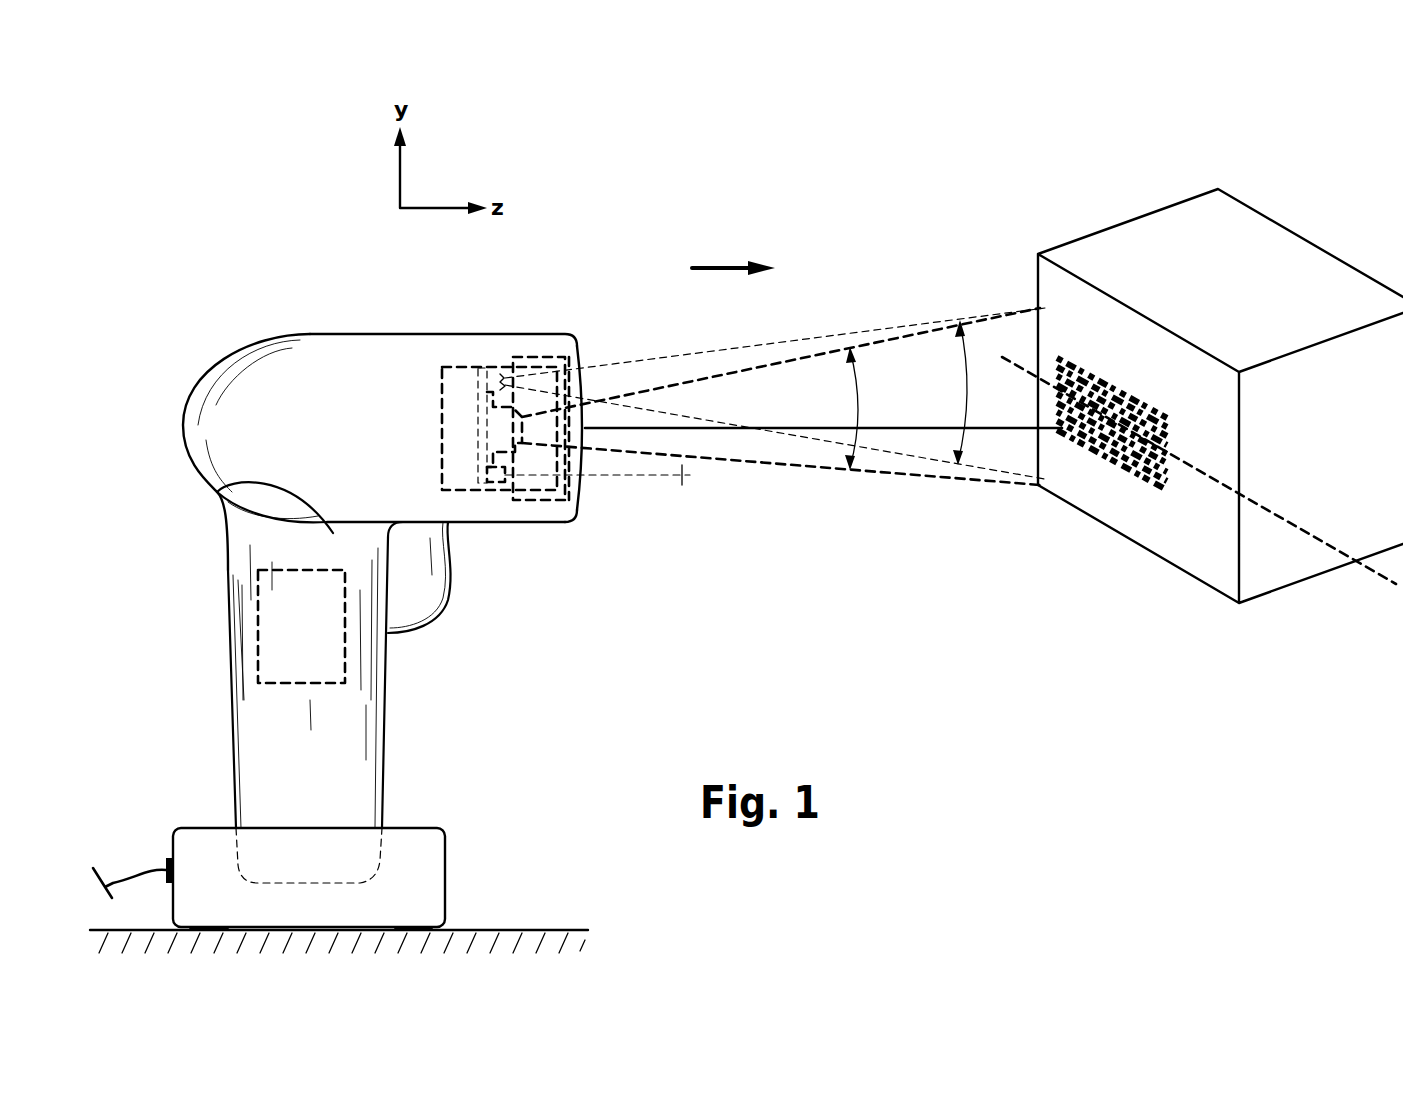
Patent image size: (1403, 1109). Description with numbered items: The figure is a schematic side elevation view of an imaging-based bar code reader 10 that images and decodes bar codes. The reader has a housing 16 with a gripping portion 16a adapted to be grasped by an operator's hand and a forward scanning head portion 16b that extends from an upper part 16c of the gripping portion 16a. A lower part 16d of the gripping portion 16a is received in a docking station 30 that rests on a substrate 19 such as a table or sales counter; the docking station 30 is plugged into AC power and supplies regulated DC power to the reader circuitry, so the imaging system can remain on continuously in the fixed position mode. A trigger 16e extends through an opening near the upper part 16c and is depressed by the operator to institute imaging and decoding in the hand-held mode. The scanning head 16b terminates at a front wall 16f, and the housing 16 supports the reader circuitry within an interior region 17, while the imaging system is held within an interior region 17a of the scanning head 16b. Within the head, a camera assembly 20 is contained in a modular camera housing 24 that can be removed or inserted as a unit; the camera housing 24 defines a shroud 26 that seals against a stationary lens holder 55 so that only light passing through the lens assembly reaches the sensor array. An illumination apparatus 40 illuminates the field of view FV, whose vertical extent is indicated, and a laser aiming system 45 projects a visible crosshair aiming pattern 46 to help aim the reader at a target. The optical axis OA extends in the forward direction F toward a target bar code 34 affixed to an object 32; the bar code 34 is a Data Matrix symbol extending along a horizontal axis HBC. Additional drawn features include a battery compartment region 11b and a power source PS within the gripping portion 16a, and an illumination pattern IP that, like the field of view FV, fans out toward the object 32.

The imaging-based bar code reader 10 is at (328, 272).
The housing 16 is at (192, 530).
The gripping portion 16a is at (226, 712).
The scanning head portion 16b is at (397, 334).
The upper part of the gripping portion 16c is at (217, 492).
The lower part of the gripping portion 16d is at (340, 857).
The trigger 16e is at (400, 590).
The front wall window 16f is at (578, 345).
The interior region of the housing 17 is at (282, 547).
The interior region of the scanning head 17a is at (505, 376).
The camera assembly 20 is at (465, 400).
The camera housing 24 is at (443, 465).
The shroud 26 is at (495, 435).
The illumination apparatus 40 is at (512, 360).
The laser aiming system 45 is at (500, 506).
The crosshair aiming pattern 46 is at (683, 477).
The stationary lens holder 55 is at (520, 445).
The battery compartment 11b is at (295, 655).
The power supply PS is at (301, 626).
The docking station 30 is at (445, 832).
The substrate 19 is at (553, 928).
The object 32 is at (1169, 580).
The target bar code 34 is at (1102, 480).
The horizontal axis of the bar code HBC is at (1370, 563).
The optical axis OA is at (1003, 430).
The forward direction F is at (733, 257).
The field of view FV is at (781, 396).
The vertical illumination pattern IP is at (775, 393).